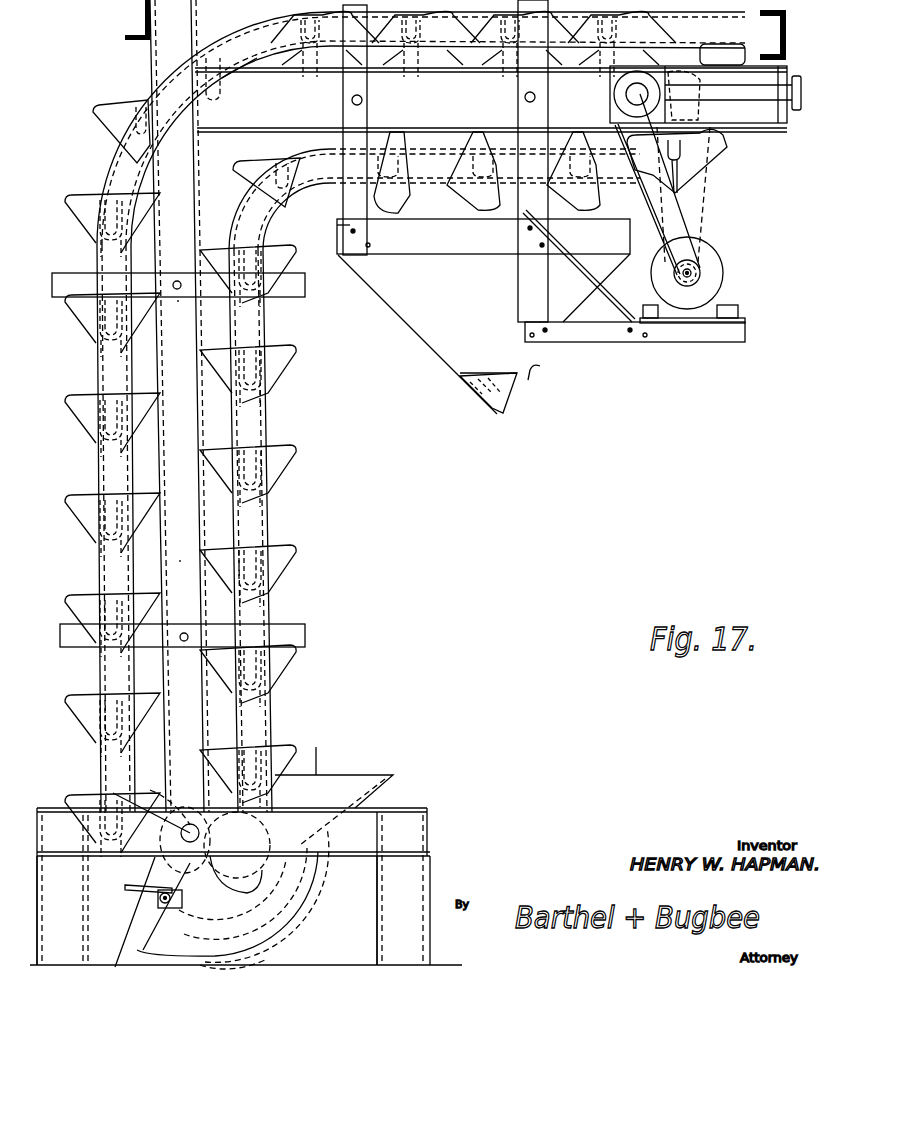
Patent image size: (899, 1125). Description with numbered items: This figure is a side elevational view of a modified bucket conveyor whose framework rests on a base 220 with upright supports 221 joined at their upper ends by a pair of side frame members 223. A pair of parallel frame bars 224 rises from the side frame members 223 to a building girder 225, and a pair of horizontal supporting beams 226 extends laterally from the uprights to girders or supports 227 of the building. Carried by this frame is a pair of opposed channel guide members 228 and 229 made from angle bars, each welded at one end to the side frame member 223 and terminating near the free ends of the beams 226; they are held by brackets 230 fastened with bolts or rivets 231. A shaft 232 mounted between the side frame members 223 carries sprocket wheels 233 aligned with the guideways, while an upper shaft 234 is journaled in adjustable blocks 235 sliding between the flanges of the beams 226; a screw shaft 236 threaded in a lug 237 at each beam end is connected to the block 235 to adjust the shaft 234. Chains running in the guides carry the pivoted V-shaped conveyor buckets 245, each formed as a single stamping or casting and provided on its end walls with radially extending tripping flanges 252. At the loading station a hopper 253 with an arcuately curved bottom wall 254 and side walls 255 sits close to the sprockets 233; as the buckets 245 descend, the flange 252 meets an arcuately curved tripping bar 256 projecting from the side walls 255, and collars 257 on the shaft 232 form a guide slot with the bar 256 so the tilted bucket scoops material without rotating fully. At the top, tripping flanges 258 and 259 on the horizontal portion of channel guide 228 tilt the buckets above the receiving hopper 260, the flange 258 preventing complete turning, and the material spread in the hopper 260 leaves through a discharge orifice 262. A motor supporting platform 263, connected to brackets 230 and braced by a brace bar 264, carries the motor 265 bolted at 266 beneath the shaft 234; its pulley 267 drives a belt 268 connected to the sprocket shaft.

The base 220 is at (432, 833).
The upright supports 221 is at (88, 952).
The side frame members 223 is at (338, 856).
The frame bars 224 is at (177, 535).
The girder or beam of a building structure 225 is at (143, 5).
The horizontal supporting beams 226 is at (491, 100).
The girders or supports 227 is at (772, 30).
The channel guide member 228 is at (265, 321).
The channel guide member 229 is at (97, 373).
The brackets 230 is at (318, 280).
The bolts or rivets 231 is at (183, 449).
The shaft 232 is at (113, 793).
The sprocket wheels 233 is at (145, 790).
The shaft 234 is at (708, 152).
The adjustable blocks 235 is at (707, 194).
The screw shaft 236 is at (752, 120).
The lug 237 is at (781, 80).
The pivoted conveyor buckets 245 is at (287, 437).
The tripping flanges 252 is at (298, 469).
The hopper 253 is at (387, 790).
The arcuately curved bottom wall portion 254 is at (268, 940).
The side walls 255 is at (333, 787).
The arcuately curved tripping bar 256 is at (232, 974).
The discs or collars 257 is at (134, 898).
The tripping flange 258 is at (320, 150).
The tripping flange 259 is at (353, 190).
The receiving hopper 260 is at (435, 326).
The discharge orifice 262 is at (497, 416).
The motor supporting platform 263 is at (590, 342).
The brace bar 264 is at (604, 292).
The motor 265 is at (720, 262).
The bolts 266 is at (730, 305).
The pulley 267 is at (684, 286).
The belt 268 is at (693, 219).